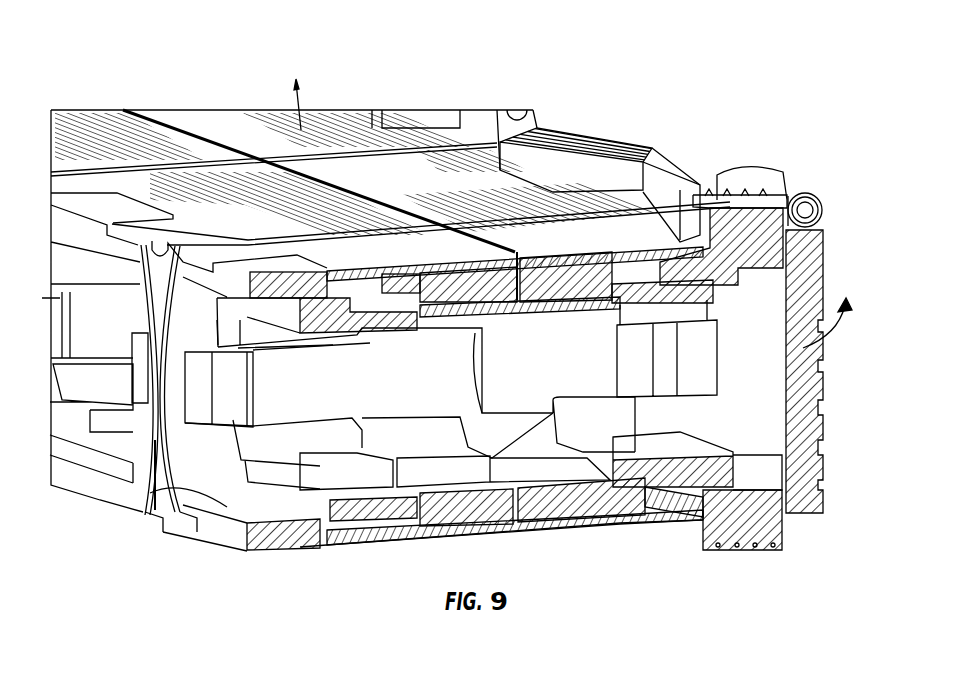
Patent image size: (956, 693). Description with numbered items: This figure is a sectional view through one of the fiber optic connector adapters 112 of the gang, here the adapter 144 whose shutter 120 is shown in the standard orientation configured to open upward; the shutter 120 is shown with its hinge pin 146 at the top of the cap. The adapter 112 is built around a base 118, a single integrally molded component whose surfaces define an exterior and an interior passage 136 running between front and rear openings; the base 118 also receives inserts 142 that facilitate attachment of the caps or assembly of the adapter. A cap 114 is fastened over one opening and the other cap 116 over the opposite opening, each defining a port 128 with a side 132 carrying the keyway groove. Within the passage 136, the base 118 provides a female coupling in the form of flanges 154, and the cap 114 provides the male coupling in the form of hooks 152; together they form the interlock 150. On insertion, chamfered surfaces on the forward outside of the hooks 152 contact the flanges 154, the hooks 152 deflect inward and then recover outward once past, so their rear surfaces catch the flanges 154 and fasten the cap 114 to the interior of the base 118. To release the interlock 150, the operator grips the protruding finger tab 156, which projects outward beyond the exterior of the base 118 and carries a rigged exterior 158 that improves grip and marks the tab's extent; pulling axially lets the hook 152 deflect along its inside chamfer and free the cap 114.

The fiber optic connector adapter 112 is at (224, 578).
The cap 114 is at (718, 500).
The cap 116 is at (307, 527).
The base 118 is at (220, 133).
The shutter 120 is at (793, 517).
The port 128 is at (155, 495).
The side of the port 132 is at (721, 246).
The interior passage 136 is at (380, 374).
The insert 142 is at (545, 467).
The adapter 144 is at (650, 185).
The roller pin 146 is at (795, 200).
The interlock 150 is at (613, 308).
The hook 152 is at (637, 288).
The flange 154 is at (675, 242).
The protruding finger tab 156 is at (768, 220).
The rigged exterior 158 is at (740, 190).